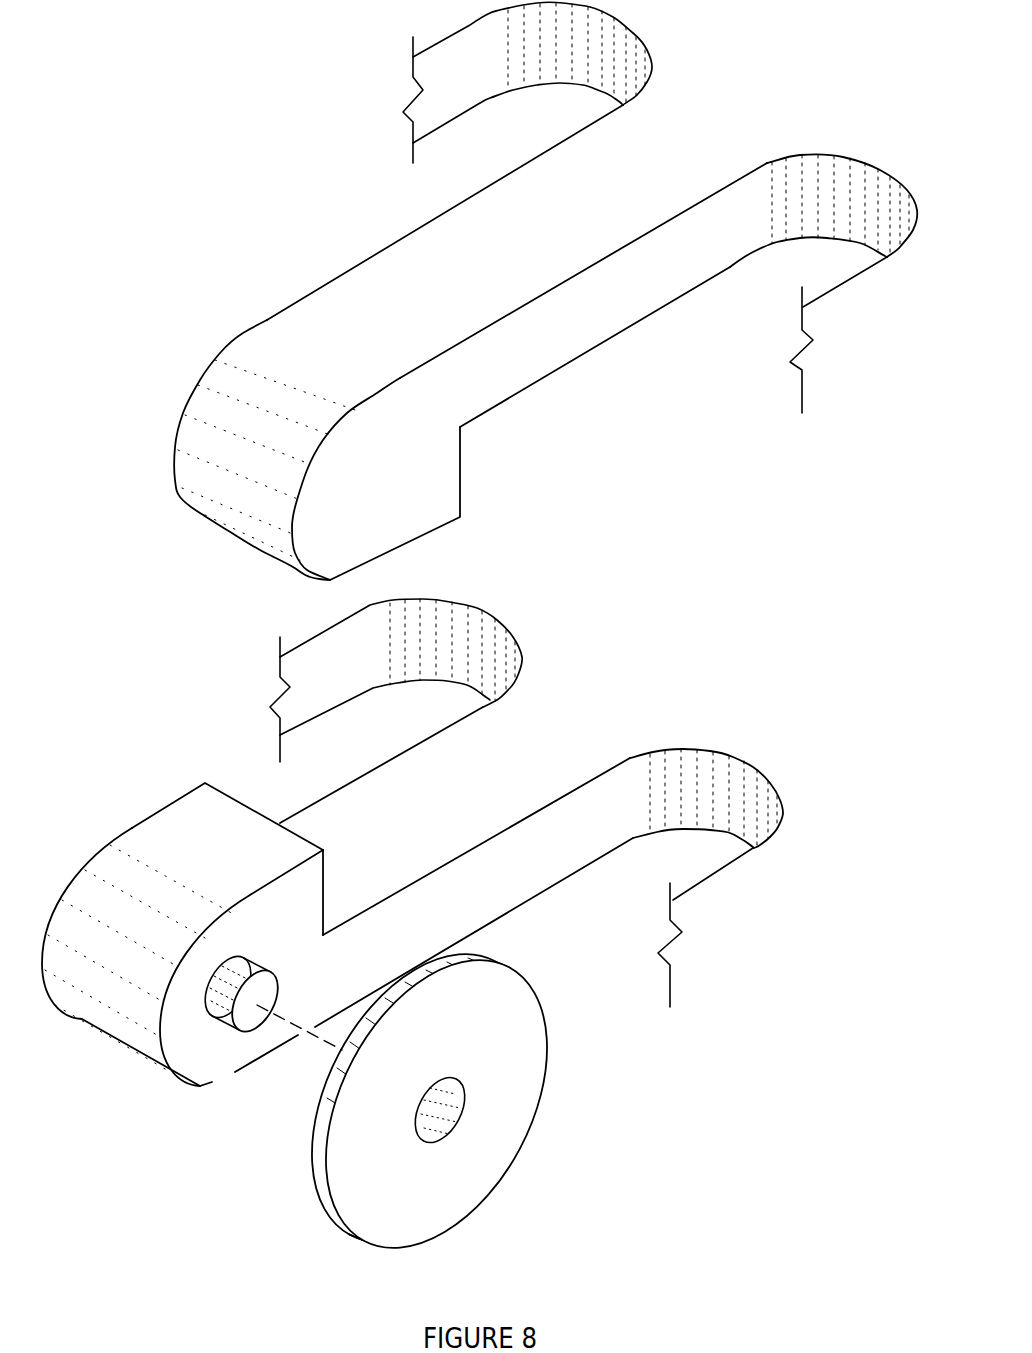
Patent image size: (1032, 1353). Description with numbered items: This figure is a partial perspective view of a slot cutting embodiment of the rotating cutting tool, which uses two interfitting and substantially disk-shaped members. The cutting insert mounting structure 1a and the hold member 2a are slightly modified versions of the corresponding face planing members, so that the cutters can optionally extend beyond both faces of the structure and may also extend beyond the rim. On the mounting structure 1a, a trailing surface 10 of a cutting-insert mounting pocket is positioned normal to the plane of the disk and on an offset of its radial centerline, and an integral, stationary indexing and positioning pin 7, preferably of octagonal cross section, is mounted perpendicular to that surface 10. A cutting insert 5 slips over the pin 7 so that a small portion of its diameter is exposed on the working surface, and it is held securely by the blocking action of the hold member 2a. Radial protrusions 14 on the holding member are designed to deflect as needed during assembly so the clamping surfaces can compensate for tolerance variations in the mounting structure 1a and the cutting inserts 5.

The radial protrusions 14 is at (467, 284).
The hold member 2a is at (658, 290).
The trailing surface 10 is at (280, 938).
The cutting insert mounting structure 1a is at (531, 867).
The indexing and positioning pin 7 is at (228, 1051).
The cutting insert 5 is at (409, 1101).